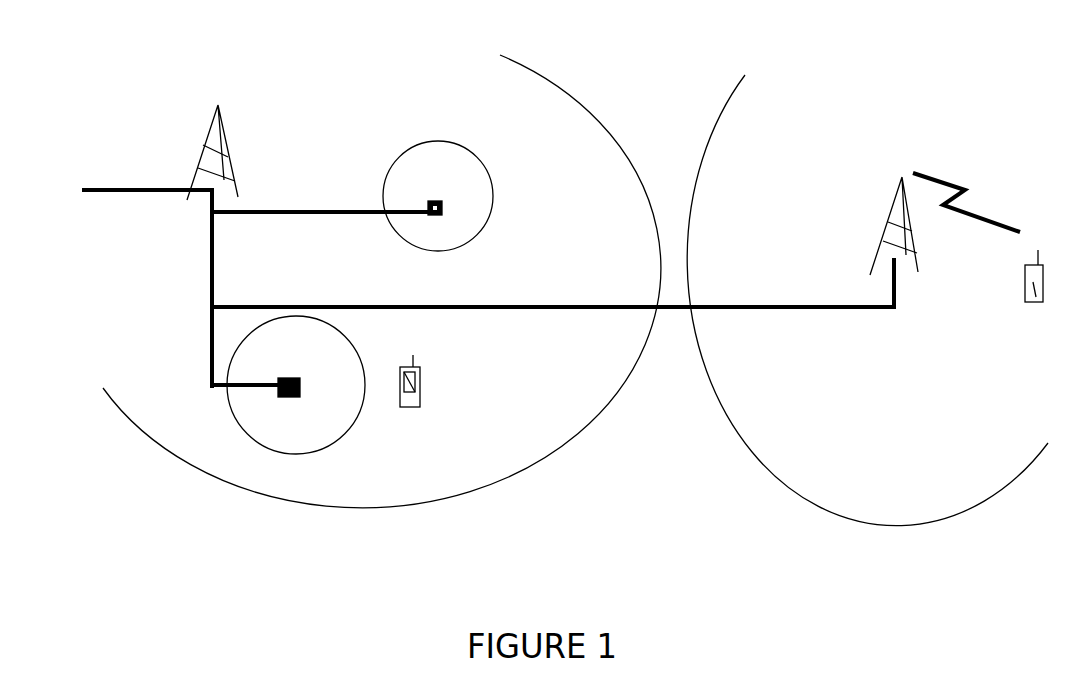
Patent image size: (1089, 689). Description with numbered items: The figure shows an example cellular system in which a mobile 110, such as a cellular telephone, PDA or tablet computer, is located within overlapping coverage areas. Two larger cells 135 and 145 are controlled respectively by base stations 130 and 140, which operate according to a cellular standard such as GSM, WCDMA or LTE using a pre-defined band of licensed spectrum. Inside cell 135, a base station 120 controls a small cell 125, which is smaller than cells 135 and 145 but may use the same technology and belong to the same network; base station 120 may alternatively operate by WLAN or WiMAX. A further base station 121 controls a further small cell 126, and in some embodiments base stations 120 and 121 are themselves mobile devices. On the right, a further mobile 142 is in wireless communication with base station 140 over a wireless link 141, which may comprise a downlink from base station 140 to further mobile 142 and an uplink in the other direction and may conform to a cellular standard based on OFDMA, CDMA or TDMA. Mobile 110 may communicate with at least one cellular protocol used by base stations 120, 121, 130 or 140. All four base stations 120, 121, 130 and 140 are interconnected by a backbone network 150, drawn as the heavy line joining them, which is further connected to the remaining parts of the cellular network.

The mobile 110 is at (420, 395).
The base station 120 is at (288, 378).
The base station 121 is at (435, 201).
The small cell 125 is at (295, 453).
The further small cell 126 is at (427, 143).
The base station 130 is at (186, 246).
The cell 135 is at (540, 455).
The base station 140 is at (877, 226).
The wireless link 141 is at (966, 202).
The further mobile 142 is at (1040, 303).
The cell 145 is at (762, 508).
The backbone network 150 is at (553, 283).